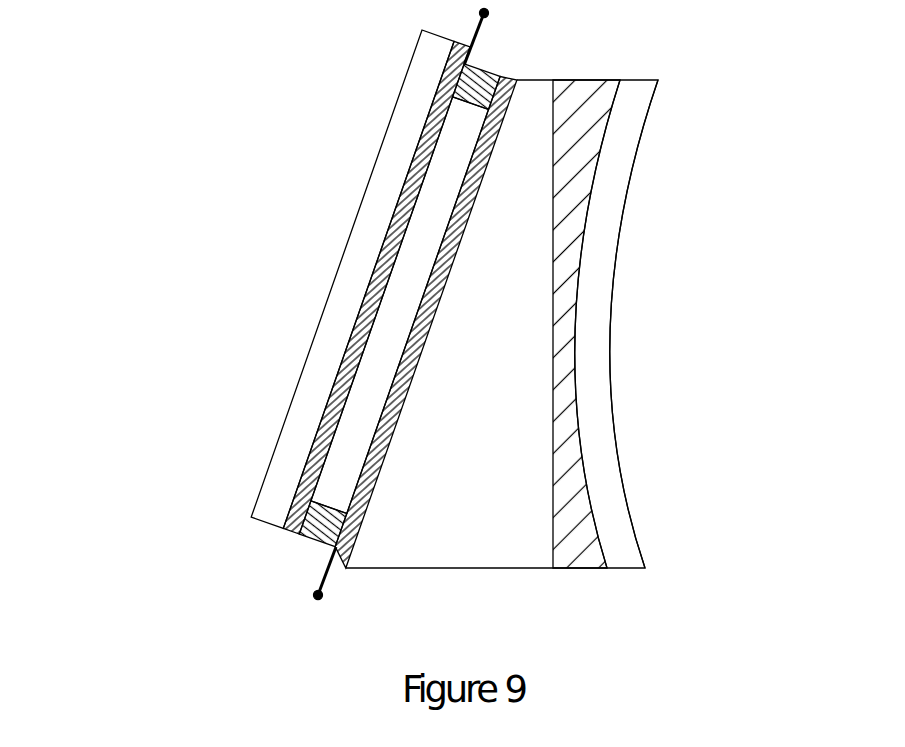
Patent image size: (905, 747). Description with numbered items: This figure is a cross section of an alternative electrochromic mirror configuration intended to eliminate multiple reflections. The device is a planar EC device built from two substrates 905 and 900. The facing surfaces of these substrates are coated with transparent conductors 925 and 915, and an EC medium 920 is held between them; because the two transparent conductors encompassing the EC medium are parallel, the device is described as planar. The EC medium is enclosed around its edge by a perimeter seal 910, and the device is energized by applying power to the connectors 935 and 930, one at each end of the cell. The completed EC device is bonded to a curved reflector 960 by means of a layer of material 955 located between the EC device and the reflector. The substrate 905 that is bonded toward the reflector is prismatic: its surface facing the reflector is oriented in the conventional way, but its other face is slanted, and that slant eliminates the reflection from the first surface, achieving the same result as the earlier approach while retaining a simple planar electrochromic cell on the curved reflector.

The substrate 900 is at (285, 467).
The substrate 905 is at (485, 396).
The perimeter seal 910 is at (480, 77).
The transparent conductor 915 is at (340, 383).
The EC medium 920 is at (410, 278).
The transparent conductor 925 is at (460, 212).
The connector 930 is at (295, 593).
The connector 935 is at (467, 20).
The bonding material 955 is at (565, 333).
The curved reflector 960 is at (603, 235).